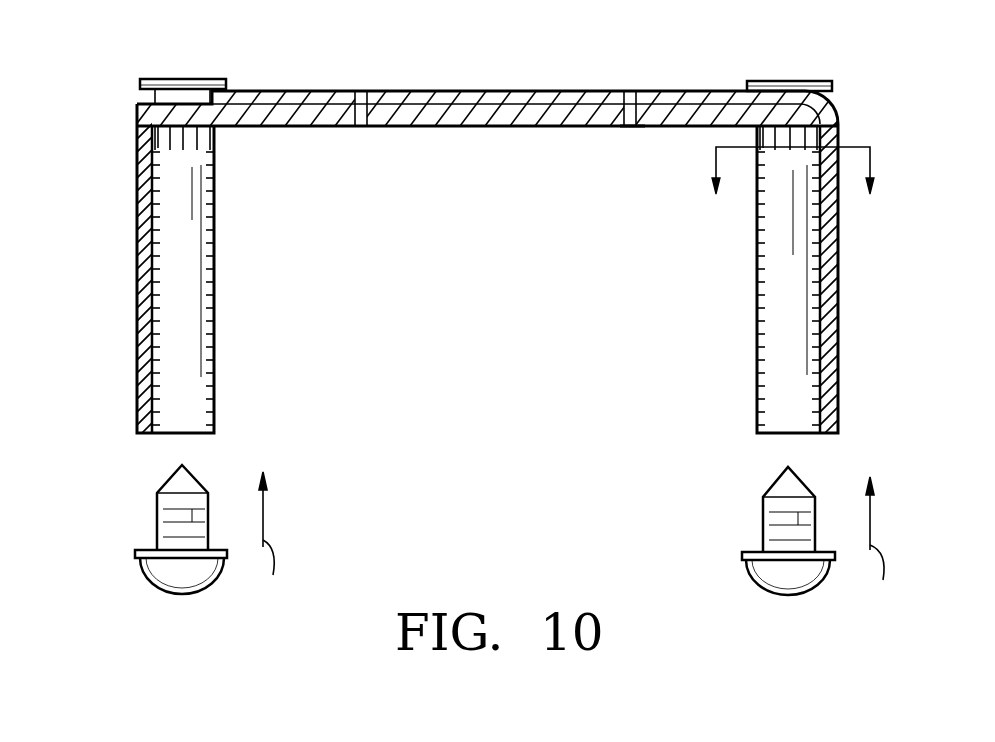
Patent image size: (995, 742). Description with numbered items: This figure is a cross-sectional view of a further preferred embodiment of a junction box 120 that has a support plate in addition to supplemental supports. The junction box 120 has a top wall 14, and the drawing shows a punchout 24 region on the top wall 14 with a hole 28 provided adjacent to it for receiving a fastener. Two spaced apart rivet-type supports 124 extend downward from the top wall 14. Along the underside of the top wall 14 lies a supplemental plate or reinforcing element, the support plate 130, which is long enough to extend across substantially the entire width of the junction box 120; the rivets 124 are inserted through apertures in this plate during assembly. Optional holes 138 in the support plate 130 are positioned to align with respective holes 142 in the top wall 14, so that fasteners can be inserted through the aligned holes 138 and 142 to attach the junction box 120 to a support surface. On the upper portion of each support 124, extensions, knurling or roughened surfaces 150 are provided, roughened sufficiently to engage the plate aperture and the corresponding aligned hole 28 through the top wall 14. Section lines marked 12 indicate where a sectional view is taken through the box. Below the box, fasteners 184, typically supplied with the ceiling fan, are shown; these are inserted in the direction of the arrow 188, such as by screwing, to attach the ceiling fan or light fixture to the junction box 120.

The section line 12 is at (796, 190).
The top wall 14 is at (322, 91).
The punchout 24 is at (847, 107).
The hole 28 is at (212, 97).
The junction box 120 is at (137, 255).
The rivet-type support 124 is at (214, 282).
The support plate 130 is at (402, 126).
The hole 138 is at (632, 126).
The hole 142 is at (653, 83).
The roughened surface 150 is at (215, 150).
The fastener 184 is at (137, 563).
The arrow 188 is at (571, 543).